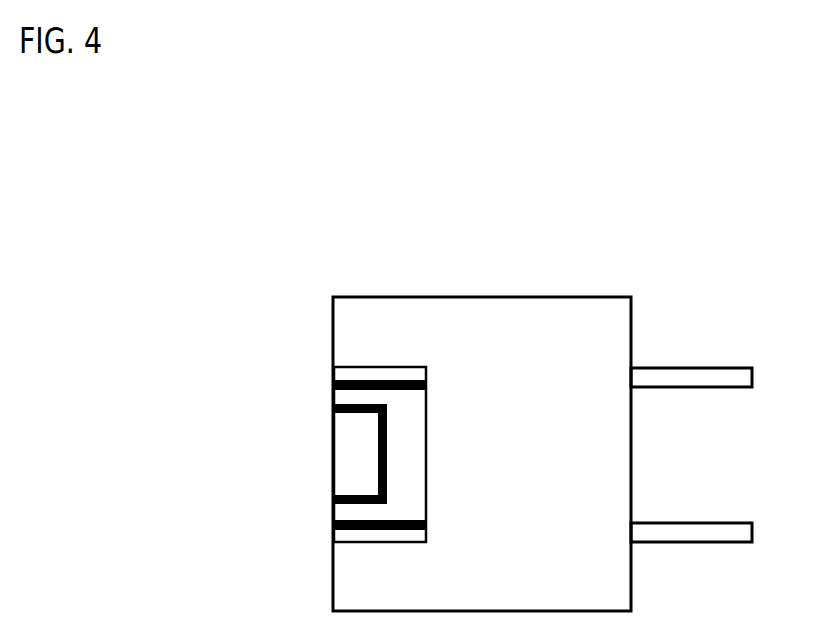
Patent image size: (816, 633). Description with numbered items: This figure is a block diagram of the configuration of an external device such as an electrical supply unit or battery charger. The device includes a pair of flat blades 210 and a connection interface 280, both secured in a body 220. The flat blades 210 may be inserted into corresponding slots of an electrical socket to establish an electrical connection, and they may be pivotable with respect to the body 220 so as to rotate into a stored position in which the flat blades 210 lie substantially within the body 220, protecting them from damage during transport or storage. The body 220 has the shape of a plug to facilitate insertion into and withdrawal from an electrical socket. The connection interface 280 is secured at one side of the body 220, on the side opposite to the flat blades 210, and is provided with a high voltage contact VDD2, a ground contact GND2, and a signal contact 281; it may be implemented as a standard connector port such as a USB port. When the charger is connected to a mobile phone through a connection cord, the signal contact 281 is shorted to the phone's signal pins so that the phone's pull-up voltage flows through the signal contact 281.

The body 220 is at (480, 297).
The flat blades 210 is at (687, 368).
The connection interface 280 is at (373, 380).
The signal contact 281 is at (333, 404).
The high voltage contact VDD2 is at (336, 383).
The ground contact GND2 is at (333, 522).